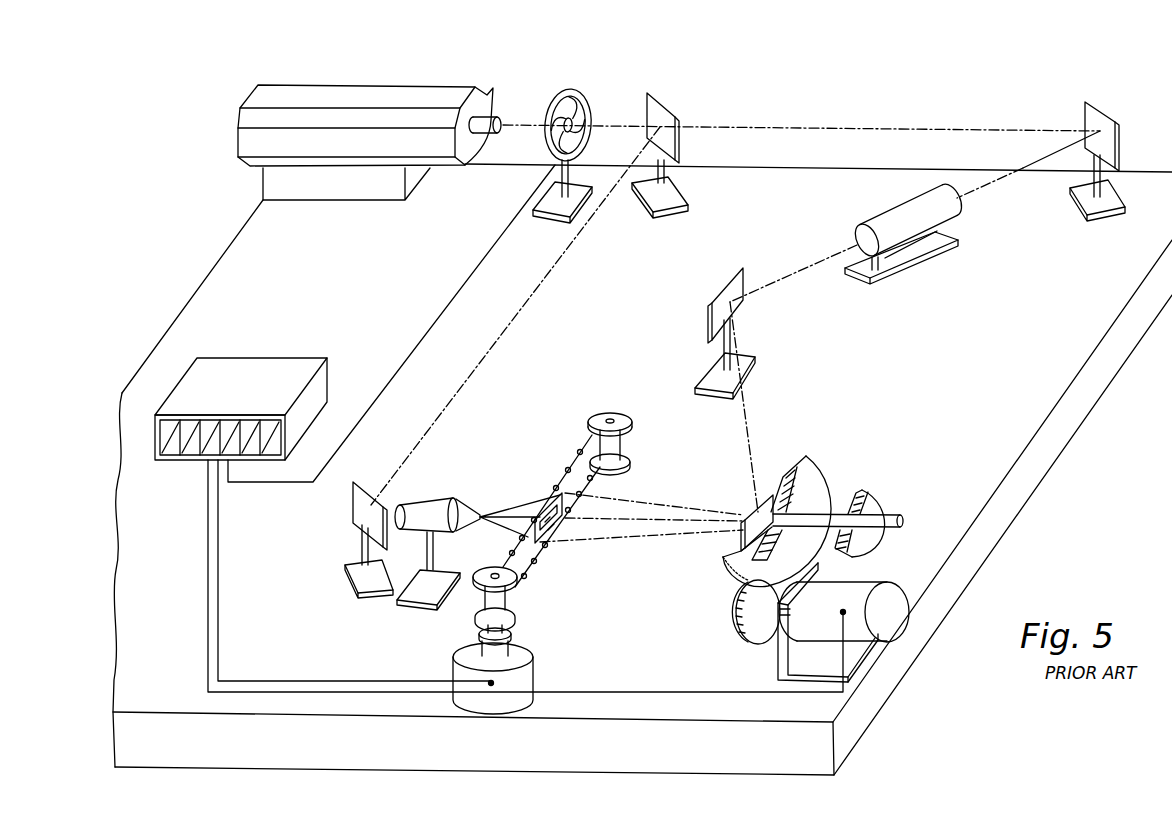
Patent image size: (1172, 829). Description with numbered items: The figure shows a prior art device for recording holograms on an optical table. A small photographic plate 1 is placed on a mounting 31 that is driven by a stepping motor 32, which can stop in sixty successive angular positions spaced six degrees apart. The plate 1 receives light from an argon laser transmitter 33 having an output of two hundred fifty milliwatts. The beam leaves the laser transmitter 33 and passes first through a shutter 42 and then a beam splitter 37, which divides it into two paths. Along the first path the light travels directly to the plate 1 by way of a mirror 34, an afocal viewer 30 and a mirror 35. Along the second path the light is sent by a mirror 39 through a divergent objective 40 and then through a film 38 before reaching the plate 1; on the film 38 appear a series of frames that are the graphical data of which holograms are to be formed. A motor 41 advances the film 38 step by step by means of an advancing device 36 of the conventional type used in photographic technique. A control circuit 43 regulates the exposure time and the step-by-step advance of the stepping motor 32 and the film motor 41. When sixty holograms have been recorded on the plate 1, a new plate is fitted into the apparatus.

The photographic plate 1 is at (746, 516).
The afocal viewer 30 is at (887, 216).
The mounting 31 is at (813, 470).
The stepping motor 32 is at (865, 586).
The argon laser transmitter 33 is at (346, 87).
The mirror 34 is at (1100, 112).
The mirror 35 is at (722, 290).
The advancing device 36 is at (508, 635).
The beam splitter 37 is at (655, 109).
The film 38 is at (528, 560).
The mirror 39 is at (353, 506).
The divergent objective 40 is at (424, 504).
The motor 41 is at (533, 677).
The shutter 42 is at (578, 96).
The control circuit 43 is at (237, 364).